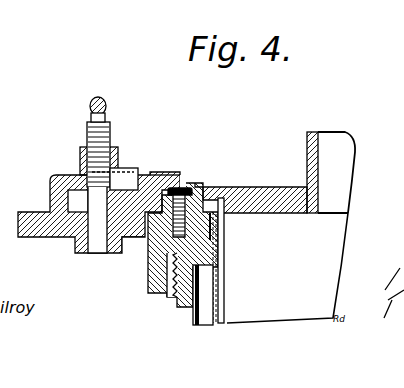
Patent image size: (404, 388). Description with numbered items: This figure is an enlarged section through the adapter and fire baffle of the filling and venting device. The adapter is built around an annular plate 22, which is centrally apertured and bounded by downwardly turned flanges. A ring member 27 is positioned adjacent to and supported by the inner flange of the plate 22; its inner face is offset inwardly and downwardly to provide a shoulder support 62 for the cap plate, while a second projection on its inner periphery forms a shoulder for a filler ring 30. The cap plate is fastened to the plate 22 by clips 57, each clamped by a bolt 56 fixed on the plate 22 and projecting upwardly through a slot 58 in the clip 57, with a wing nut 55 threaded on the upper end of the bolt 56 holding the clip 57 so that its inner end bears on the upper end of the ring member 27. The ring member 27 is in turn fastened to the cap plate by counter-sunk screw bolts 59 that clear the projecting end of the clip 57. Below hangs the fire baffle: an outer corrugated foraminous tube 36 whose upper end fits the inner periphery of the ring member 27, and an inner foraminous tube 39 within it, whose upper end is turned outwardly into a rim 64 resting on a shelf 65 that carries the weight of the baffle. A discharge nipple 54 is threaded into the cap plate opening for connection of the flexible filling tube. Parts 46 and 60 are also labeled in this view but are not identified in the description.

The annular plate 22 is at (36, 213).
The ring member 27 is at (168, 240).
The filler ring 30 is at (223, 247).
The outer foraminous tube 36 is at (193, 315).
The inner foraminous tube 39 is at (210, 182).
The strip 46 is at (224, 272).
The discharge nipple 54 is at (313, 131).
The wing nuts 55 is at (86, 156).
The bolts 56 is at (108, 212).
The clips 57 is at (160, 180).
The slot 58 is at (126, 176).
The screw bolts 59 is at (145, 246).
The set screw 60 is at (185, 188).
The shoulder support 62 is at (219, 195).
The rim 64 is at (212, 222).
The shelf 65 is at (212, 234).